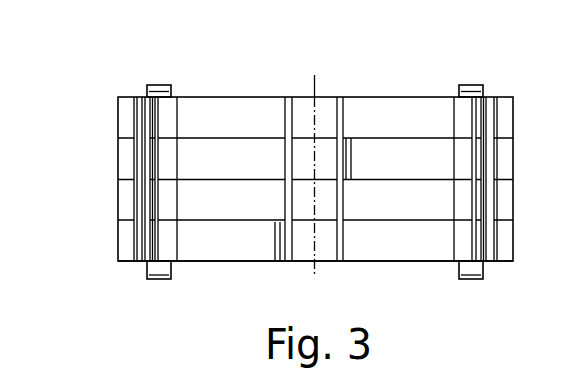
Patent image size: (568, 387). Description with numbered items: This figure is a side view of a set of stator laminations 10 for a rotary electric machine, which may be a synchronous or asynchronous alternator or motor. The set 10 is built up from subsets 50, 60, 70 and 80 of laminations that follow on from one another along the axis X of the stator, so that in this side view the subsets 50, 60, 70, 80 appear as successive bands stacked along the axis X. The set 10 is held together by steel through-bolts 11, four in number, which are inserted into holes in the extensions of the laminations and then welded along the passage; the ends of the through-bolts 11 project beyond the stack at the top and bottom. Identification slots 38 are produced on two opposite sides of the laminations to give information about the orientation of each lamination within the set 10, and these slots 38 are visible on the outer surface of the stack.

The set of stator laminations 10 is at (511, 89).
The steel through-bolt 11 is at (158, 281).
The identification slot 38 is at (274, 247).
The subset 50 is at (130, 243).
The subset 60 is at (130, 203).
The subset 70 is at (128, 152).
The subset 80 is at (128, 122).
The axis X is at (314, 86).